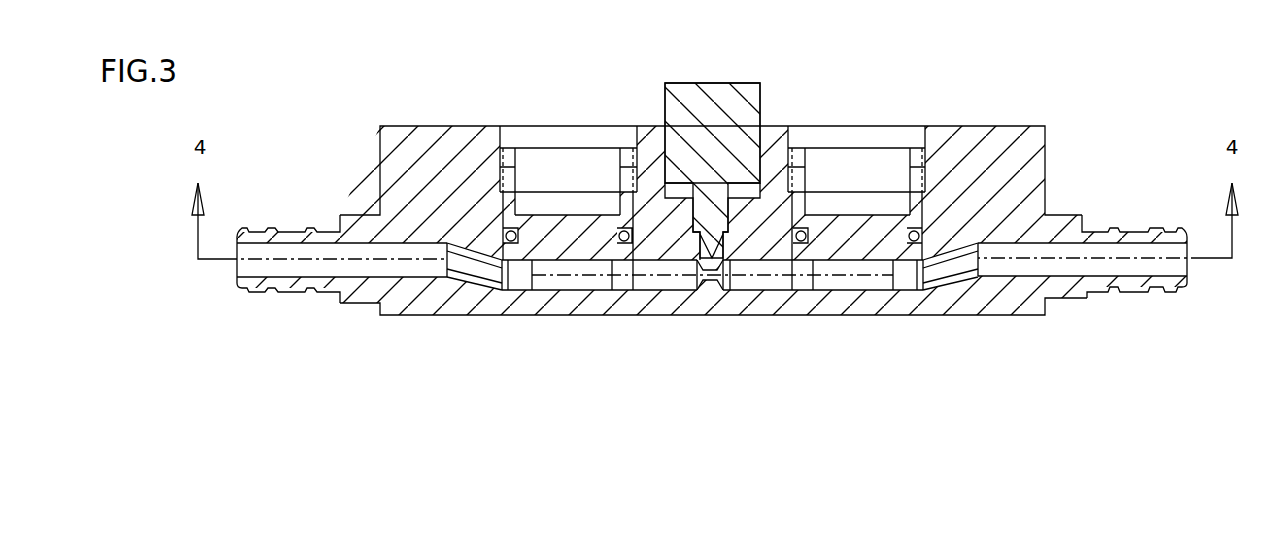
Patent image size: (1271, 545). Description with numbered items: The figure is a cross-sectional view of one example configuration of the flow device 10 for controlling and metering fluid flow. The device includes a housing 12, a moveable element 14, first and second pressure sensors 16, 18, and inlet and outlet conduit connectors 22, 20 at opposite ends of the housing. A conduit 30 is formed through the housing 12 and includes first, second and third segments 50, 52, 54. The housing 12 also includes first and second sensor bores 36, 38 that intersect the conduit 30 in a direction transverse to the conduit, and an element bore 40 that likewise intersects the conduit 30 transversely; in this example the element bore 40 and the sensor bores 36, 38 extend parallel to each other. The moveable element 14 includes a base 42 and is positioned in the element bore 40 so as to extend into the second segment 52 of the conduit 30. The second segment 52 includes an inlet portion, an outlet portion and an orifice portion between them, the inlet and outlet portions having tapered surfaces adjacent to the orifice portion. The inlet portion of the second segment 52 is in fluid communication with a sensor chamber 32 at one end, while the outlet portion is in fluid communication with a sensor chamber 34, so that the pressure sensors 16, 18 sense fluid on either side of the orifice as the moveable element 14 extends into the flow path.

The flow device 10 is at (972, 70).
The housing 12 is at (1013, 123).
The moveable element 14 is at (717, 92).
The first pressure sensor 16 is at (842, 147).
The second pressure sensor 18 is at (568, 147).
The outlet conduit connector 20 is at (1067, 300).
The inlet conduit connector 22 is at (362, 303).
The conduit 30 is at (1077, 250).
The sensor chamber 32 is at (566, 283).
The sensor chamber 34 is at (858, 283).
The first sensor bore 36 is at (923, 133).
The second sensor bore 38 is at (500, 135).
The element bore 40 is at (665, 185).
The base 42 is at (752, 150).
The first segment 50 is at (413, 287).
The second segment 52 is at (700, 318).
The third segment 54 is at (1003, 292).